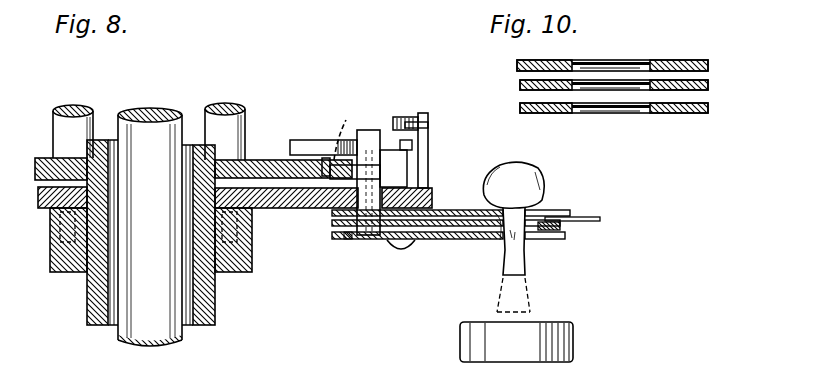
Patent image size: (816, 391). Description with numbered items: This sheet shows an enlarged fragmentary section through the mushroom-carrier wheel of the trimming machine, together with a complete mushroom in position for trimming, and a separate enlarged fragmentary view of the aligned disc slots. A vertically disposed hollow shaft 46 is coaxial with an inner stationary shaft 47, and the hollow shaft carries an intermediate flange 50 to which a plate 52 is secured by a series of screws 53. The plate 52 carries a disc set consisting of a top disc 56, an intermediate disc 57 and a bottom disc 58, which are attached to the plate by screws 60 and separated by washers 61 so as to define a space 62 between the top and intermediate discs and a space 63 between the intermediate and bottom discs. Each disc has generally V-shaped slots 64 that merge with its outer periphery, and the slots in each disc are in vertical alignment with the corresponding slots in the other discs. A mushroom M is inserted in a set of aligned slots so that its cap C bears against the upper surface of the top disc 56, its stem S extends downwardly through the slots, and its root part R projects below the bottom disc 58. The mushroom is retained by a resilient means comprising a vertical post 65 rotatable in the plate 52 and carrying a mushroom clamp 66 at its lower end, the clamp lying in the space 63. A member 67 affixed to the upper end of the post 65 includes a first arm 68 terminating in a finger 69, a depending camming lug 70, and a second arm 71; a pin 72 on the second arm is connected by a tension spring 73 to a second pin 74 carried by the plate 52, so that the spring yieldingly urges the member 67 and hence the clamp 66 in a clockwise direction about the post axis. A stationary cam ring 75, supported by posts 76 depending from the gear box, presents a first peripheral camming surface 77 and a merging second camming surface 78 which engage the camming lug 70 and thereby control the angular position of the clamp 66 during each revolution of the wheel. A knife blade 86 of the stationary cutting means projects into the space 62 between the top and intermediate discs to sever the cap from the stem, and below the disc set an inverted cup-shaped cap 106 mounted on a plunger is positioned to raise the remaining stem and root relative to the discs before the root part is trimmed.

In FIG. 8, the hollow shaft 46 is at (97, 140).
In FIG. 8, the stationary shaft 47 is at (150, 123).
In FIG. 8, the intermediate flange 50 is at (50, 255).
In FIG. 8, the plate 52 is at (40, 192).
In FIG. 8, the screws 53 is at (60, 228).
In FIG. 8, the top disc 56 is at (566, 210).
In FIG. 10, the top disc 56 is at (709, 66).
In FIG. 8, the intermediate disc 57 is at (560, 228).
In FIG. 10, the intermediate disc 57 is at (709, 86).
In FIG. 8, the bottom disc 58 is at (565, 238).
In FIG. 10, the bottom disc 58 is at (709, 108).
In FIG. 8, the screws 60 is at (403, 250).
In FIG. 8, the washers 61 is at (437, 240).
In FIG. 8, the space 62 is at (331, 212).
In FIG. 10, the space 62 is at (519, 74).
In FIG. 8, the space 63 is at (331, 226).
In FIG. 10, the space 63 is at (520, 97).
In FIG. 8, the V-shaped slots 64 is at (500, 236).
In FIG. 10, the V-shaped slots 64 is at (620, 109).
In FIG. 8, the post 65 is at (374, 131).
In FIG. 8, the mushroom clamp 66 is at (562, 226).
In FIG. 8, the member 67 is at (400, 163).
In FIG. 8, the first arm 68 is at (335, 134).
In FIG. 8, the finger 69 is at (293, 148).
In FIG. 8, the camming lug 70 is at (346, 177).
In FIG. 8, the second arm 71 is at (412, 144).
In FIG. 8, the pin 72 is at (429, 126).
In FIG. 8, the tension spring 73 is at (424, 114).
In FIG. 8, the second pin 74 is at (405, 117).
In FIG. 8, the cam ring 75 is at (38, 165).
In FIG. 8, the posts 76 is at (60, 118).
In FIG. 8, the first camming surface 77 is at (324, 160).
In FIG. 8, the second camming surface 78 is at (348, 133).
In FIG. 8, the knife blade 86 is at (601, 219).
In FIG. 8, the cap 106 is at (574, 329).
In FIG. 8, the mushroom M is at (527, 161).
In FIG. 8, the cap C is at (545, 185).
In FIG. 8, the stem S is at (520, 245).
In FIG. 8, the root part R is at (525, 272).